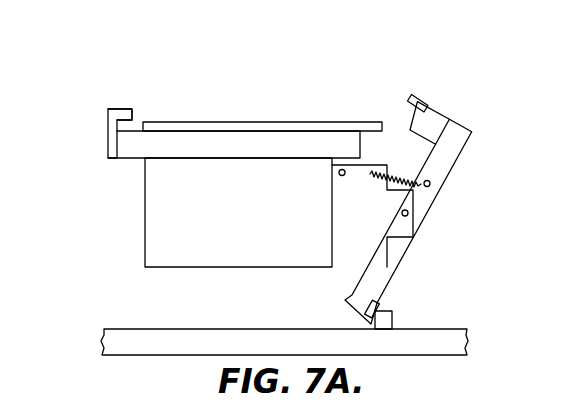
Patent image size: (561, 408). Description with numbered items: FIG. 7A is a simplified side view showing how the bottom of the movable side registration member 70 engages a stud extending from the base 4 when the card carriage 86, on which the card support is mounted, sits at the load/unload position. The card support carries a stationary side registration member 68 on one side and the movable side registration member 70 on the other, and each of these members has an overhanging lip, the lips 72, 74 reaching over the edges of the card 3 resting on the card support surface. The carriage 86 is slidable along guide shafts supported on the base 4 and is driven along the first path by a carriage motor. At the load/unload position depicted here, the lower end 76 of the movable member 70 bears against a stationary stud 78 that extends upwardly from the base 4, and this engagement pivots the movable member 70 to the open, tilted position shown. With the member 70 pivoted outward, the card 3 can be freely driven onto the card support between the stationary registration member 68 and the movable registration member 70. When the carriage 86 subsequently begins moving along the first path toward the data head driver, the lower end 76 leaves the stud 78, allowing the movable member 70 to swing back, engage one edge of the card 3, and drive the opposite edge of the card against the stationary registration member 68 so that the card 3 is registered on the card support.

The card 3 is at (234, 122).
The base 4 is at (182, 329).
The stationary side registration member 68 is at (108, 112).
The movable side registration member 70 is at (465, 124).
The overhanging lip 72 is at (120, 109).
The overhanging lip 74 is at (421, 97).
The lower end 76 is at (348, 296).
The stationary stud 78 is at (394, 318).
The carriage 86 is at (158, 242).